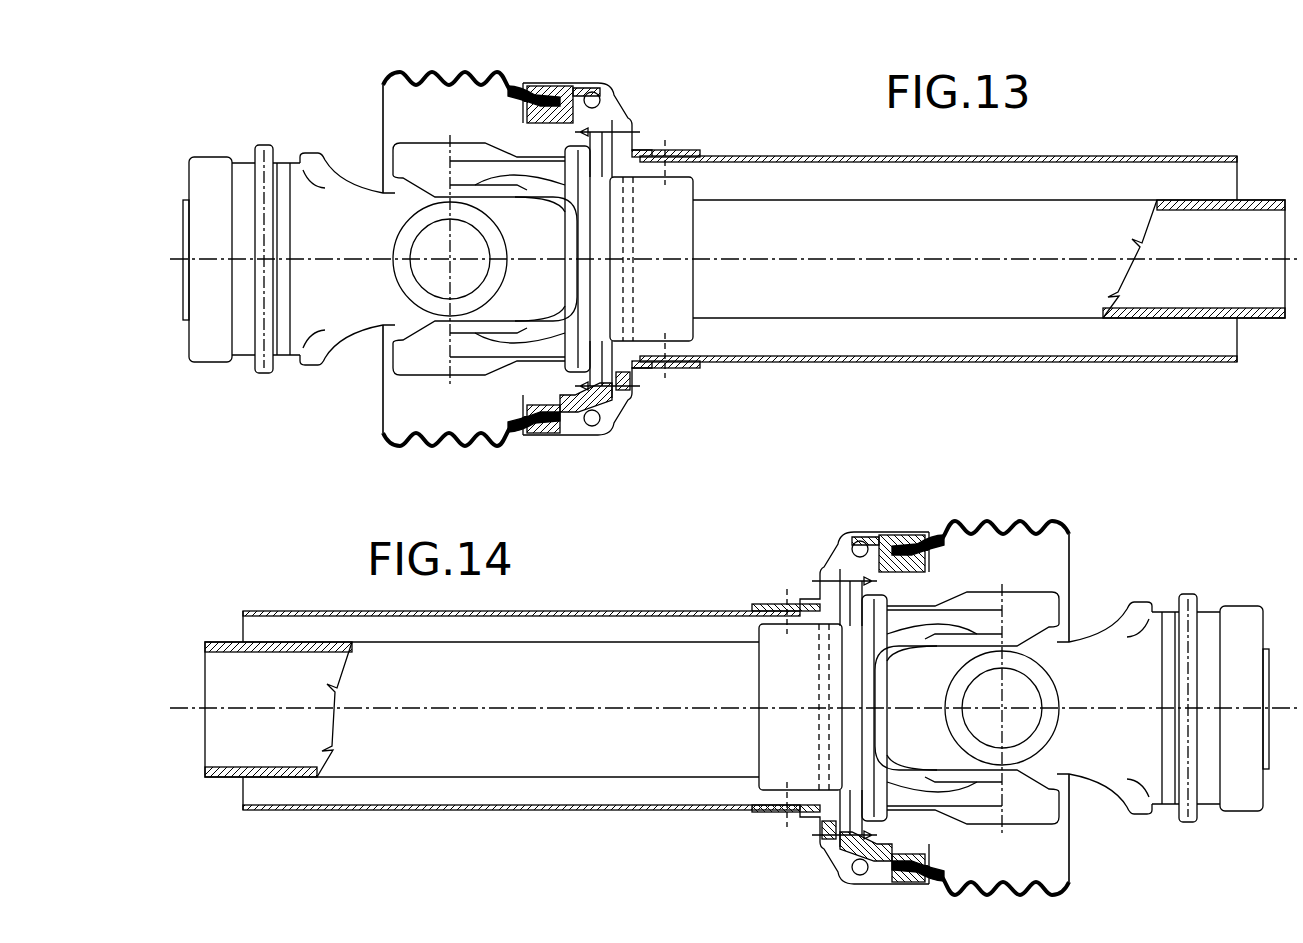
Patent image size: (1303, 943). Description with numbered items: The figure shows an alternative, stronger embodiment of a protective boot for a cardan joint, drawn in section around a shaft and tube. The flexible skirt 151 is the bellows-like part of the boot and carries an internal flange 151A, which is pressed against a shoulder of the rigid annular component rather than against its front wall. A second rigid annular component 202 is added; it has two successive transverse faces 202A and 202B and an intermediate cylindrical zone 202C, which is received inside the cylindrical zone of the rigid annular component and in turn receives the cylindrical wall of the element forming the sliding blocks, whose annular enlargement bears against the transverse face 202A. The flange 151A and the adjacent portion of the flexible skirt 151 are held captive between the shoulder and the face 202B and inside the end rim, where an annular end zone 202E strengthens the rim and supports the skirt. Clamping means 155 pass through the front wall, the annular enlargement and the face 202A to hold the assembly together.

In FIG. 13, the flexible skirt 151 is at (400, 72).
In FIG. 14, the flexible skirt 151 is at (1050, 519).
In FIG. 13, the internal flange 151A is at (582, 88).
In FIG. 13, the clamping means 155 is at (624, 128).
In FIG. 14, the clamping means 155 is at (818, 577).
In FIG. 13, the second rigid annular component 202 is at (548, 126).
In FIG. 13, the transverse face 202A is at (642, 380).
In FIG. 13, the transverse face 202B is at (555, 412).
In FIG. 13, the intermediate cylindrical zone 202C is at (593, 402).
In FIG. 13, the annular end zone 202E is at (512, 82).